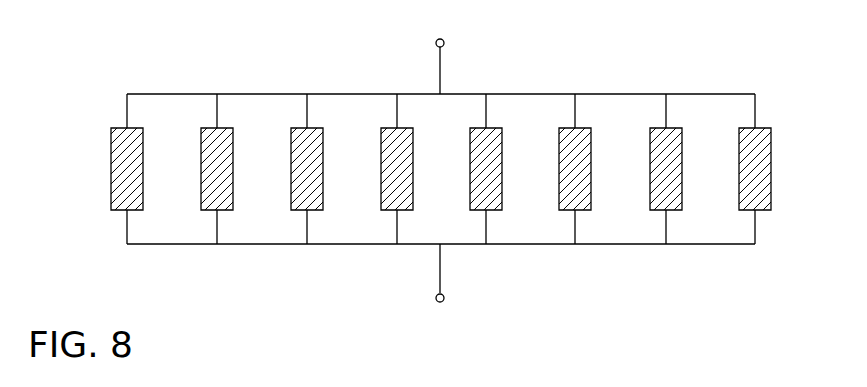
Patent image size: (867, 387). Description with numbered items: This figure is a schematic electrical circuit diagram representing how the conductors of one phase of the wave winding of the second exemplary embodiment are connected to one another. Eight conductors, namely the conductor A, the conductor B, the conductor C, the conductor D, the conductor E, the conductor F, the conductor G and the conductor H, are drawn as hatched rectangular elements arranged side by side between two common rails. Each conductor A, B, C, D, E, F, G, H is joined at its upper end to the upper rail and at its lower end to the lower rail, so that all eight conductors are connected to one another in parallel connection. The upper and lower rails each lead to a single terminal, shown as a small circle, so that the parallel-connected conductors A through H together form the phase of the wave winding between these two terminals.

The conductor A is at (148, 169).
The conductor B is at (238, 169).
The conductor C is at (328, 169).
The conductor D is at (419, 169).
The conductor E is at (507, 169).
The conductor F is at (595, 169).
The conductor G is at (688, 169).
The conductor H is at (771, 169).